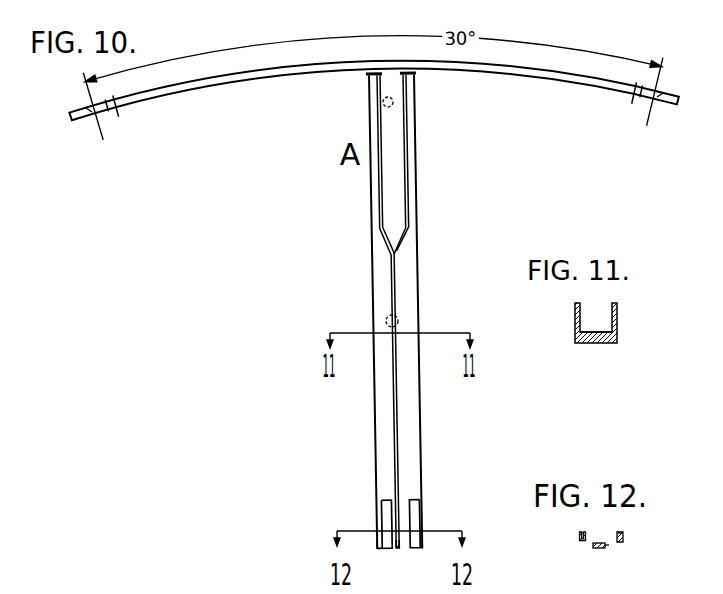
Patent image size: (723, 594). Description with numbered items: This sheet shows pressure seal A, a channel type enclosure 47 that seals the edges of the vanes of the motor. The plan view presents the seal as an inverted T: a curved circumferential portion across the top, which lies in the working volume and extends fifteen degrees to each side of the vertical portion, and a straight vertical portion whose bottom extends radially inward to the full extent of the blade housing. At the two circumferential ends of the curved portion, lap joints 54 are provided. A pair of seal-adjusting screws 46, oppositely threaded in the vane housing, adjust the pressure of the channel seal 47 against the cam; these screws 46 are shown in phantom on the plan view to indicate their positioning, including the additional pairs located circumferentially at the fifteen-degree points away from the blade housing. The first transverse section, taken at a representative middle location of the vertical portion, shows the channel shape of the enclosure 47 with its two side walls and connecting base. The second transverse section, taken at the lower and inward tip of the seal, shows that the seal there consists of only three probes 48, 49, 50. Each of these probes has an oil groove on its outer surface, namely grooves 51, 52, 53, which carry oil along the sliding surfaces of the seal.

In FIG. 10, the seal-adjusting screws 46 is at (394, 102).
In FIG. 10, the channel type enclosure 47 is at (414, 359).
In FIG. 11, the channel type enclosure 47 is at (618, 305).
In FIG. 10, the probe 48 is at (380, 549).
In FIG. 12, the probe 48 is at (580, 541).
In FIG. 10, the probe 49 is at (398, 549).
In FIG. 12, the probe 49 is at (605, 548).
In FIG. 10, the probe 50 is at (418, 549).
In FIG. 12, the probe 50 is at (624, 540).
In FIG. 12, the oil groove 51 is at (579, 536).
In FIG. 10, the oil groove 52 is at (400, 424).
In FIG. 11, the oil groove 52 is at (598, 344).
In FIG. 12, the oil groove 52 is at (598, 549).
In FIG. 12, the oil groove 53 is at (623, 535).
In FIG. 10, the lap joints 54 is at (375, 110).